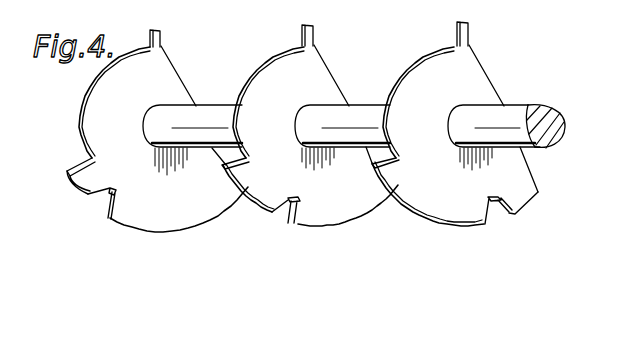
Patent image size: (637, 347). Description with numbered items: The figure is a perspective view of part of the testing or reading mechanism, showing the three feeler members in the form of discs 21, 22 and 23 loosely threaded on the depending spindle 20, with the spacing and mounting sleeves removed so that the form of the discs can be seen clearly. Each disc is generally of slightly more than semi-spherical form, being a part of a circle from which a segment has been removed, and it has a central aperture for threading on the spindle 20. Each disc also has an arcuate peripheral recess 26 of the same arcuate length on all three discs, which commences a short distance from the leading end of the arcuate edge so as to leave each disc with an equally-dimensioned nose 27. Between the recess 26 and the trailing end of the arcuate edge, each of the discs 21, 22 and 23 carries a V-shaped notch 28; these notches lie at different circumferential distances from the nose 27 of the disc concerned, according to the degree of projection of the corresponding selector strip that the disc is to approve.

The spindle 20 is at (515, 108).
The disc 21 is at (524, 190).
The disc 22 is at (353, 198).
The disc 23 is at (179, 190).
The arcuate peripheral recess 26 is at (96, 84).
The nose 27 is at (162, 43).
The V-shaped notch 28 is at (107, 209).